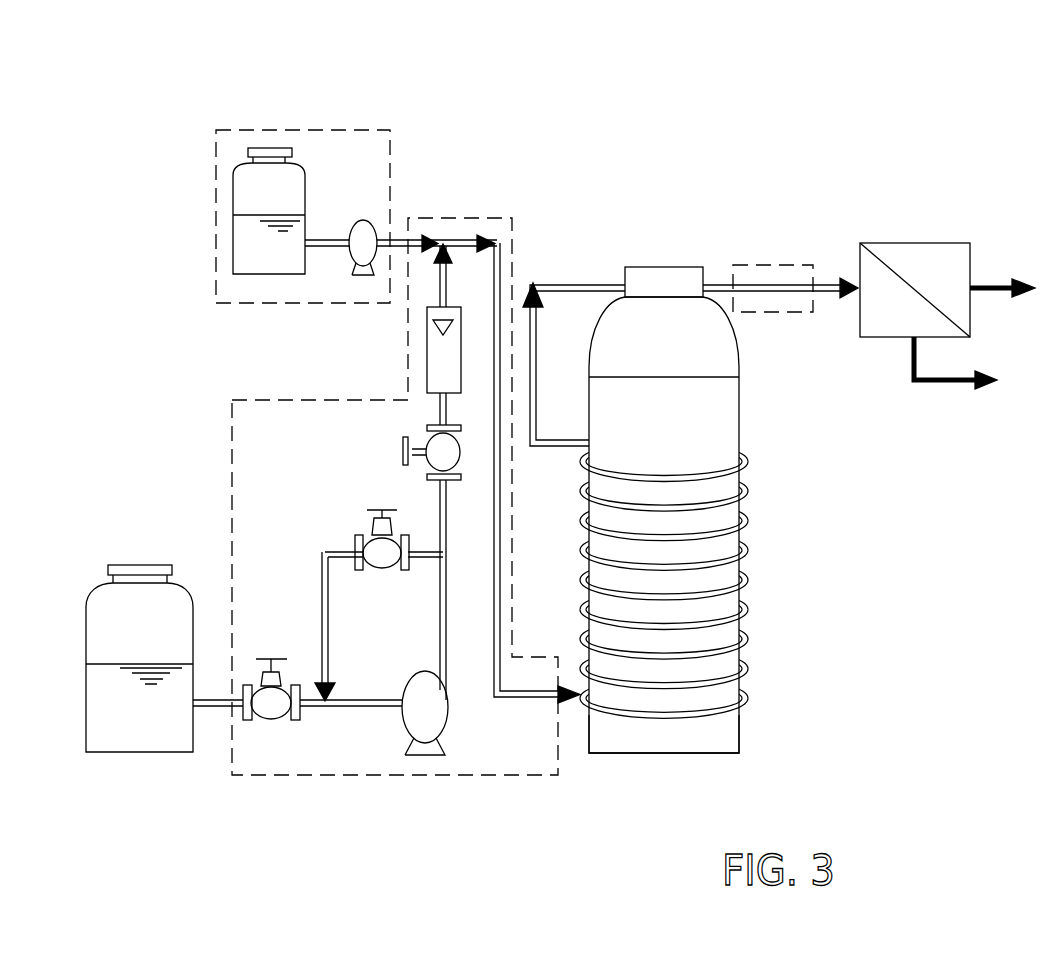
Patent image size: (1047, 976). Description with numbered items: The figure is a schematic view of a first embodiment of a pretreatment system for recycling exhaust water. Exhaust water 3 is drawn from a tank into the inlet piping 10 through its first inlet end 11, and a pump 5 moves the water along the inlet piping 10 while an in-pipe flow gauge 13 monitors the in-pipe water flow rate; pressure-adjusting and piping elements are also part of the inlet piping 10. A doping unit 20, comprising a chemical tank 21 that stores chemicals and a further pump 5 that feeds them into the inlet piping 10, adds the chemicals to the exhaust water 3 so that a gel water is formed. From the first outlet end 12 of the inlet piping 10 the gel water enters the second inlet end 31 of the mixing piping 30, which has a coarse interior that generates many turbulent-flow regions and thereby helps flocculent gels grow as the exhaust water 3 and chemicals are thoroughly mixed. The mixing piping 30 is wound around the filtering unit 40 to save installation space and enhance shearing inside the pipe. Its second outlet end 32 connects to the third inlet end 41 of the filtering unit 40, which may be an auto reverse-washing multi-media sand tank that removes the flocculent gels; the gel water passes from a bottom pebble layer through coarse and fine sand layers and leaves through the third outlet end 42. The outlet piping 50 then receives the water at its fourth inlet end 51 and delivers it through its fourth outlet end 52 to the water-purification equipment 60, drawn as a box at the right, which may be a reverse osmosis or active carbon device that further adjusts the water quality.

The exhaust water 3 is at (102, 627).
The pump 5 is at (358, 228).
The inlet piping 10 is at (325, 765).
The first inlet end 11 is at (232, 706).
The first outlet end 12 is at (560, 703).
The in-pipe flow gauge 13 is at (437, 355).
The doping unit 20 is at (310, 150).
The chemical tank 21 is at (250, 240).
The mixing piping 30 is at (740, 640).
The second inlet end 31 is at (592, 720).
The second outlet end 32 is at (583, 446).
The filtering unit 40 is at (665, 325).
The third inlet end 41 is at (625, 287).
The third outlet end 42 is at (703, 277).
The outlet piping 50 is at (775, 272).
The fourth inlet end 51 is at (737, 297).
The fourth outlet end 52 is at (813, 298).
The separator 60 is at (932, 263).